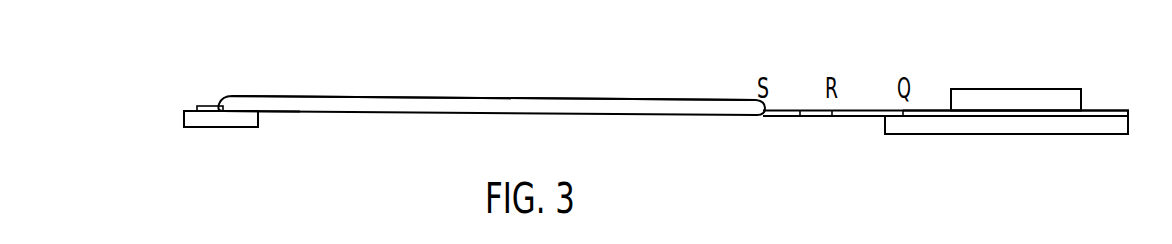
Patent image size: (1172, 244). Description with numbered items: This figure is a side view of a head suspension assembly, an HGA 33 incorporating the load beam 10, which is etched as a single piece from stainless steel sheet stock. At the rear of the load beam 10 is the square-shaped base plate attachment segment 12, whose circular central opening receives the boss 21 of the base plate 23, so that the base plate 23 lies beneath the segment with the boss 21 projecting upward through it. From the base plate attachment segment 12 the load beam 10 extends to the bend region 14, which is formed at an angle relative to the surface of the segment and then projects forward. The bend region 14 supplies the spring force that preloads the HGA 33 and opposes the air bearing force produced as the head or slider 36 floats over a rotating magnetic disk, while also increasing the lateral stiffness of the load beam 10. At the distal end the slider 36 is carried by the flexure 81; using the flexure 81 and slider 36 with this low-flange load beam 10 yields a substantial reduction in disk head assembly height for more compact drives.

The load beam 10 is at (680, 68).
The HGA 33 is at (488, 79).
The slider 36 is at (215, 128).
The flexure 81 is at (285, 113).
The bend region 14 is at (798, 116).
The base plate attachment segment 12 is at (1109, 110).
The boss 21 is at (993, 89).
The base plate 23 is at (1110, 127).